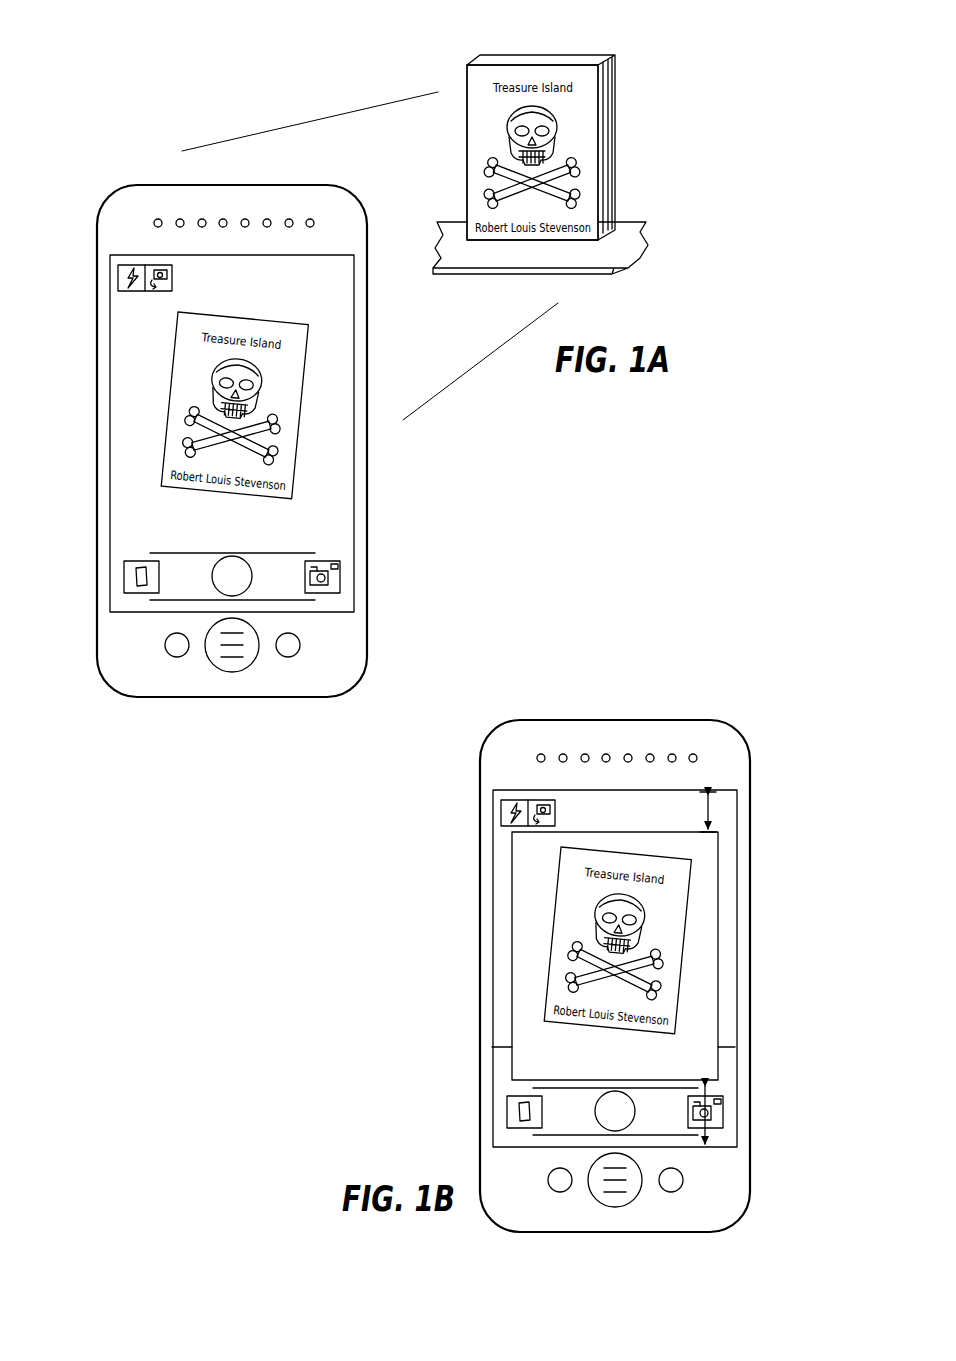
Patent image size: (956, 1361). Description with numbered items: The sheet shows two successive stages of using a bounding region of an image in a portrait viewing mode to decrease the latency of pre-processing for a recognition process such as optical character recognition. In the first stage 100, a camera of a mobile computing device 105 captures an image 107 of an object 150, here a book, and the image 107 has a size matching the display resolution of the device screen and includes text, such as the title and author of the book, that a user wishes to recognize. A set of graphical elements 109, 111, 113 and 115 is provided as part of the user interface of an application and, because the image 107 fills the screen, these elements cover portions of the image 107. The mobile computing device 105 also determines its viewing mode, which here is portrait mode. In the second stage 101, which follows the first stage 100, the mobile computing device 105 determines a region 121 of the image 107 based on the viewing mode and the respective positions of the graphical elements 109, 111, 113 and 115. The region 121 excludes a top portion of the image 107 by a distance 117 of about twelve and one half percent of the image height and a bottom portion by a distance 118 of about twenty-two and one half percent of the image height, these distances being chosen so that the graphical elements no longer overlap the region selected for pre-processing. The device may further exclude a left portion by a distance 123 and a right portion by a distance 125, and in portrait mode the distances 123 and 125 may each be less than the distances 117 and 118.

In FIG. 1A, the first stage 100 is at (714, 151).
In FIG. 1B, the second stage 101 is at (408, 963).
In FIG. 1A, the mobile computing device 105 is at (150, 176).
In FIG. 1B, the mobile computing device 105 is at (536, 708).
In FIG. 1A, the image 107 is at (170, 405).
In FIG. 1B, the image 107 is at (548, 942).
In FIG. 1A, the graphical element 109 is at (146, 265).
In FIG. 1B, the graphical element 109 is at (530, 800).
In FIG. 1A, the graphical element 111 is at (124, 576).
In FIG. 1B, the graphical element 111 is at (505, 1112).
In FIG. 1A, the graphical element 113 is at (232, 585).
In FIG. 1B, the graphical element 113 is at (615, 1120).
In FIG. 1A, the graphical element 115 is at (340, 576).
In FIG. 1B, the graphical element 115 is at (722, 1120).
In FIG. 1B, the distance 117 is at (712, 812).
In FIG. 1B, the distance 118 is at (722, 1107).
In FIG. 1B, the region 121 is at (718, 980).
In FIG. 1B, the distance 123 is at (505, 1043).
In FIG. 1B, the distance 125 is at (728, 1043).
In FIG. 1A, the object 150 is at (615, 147).